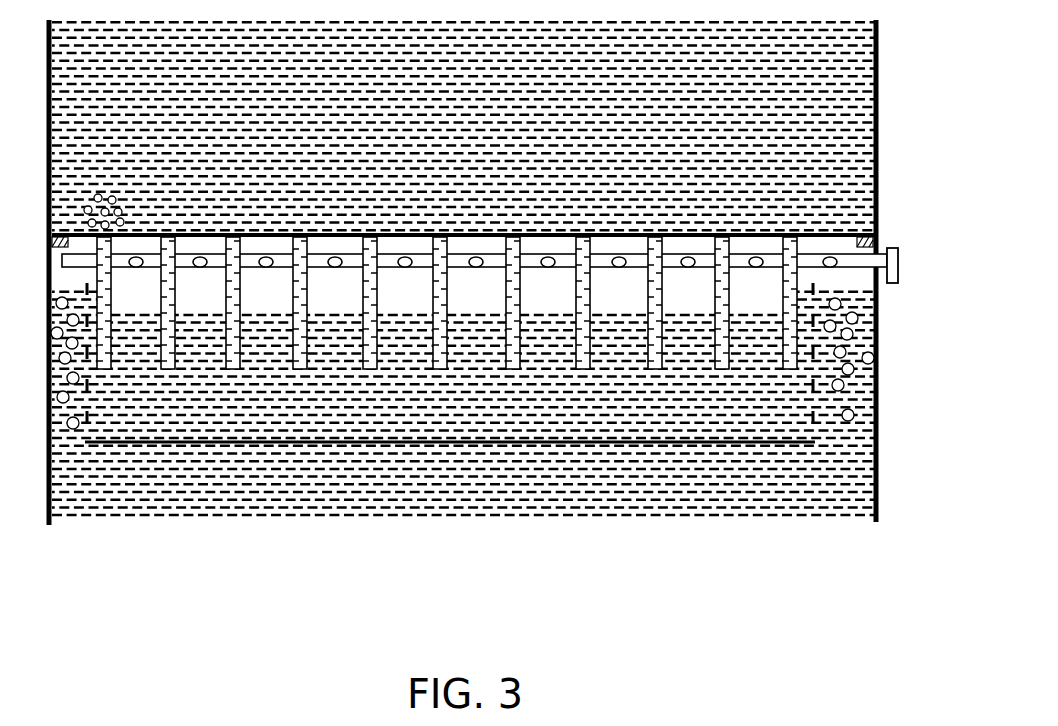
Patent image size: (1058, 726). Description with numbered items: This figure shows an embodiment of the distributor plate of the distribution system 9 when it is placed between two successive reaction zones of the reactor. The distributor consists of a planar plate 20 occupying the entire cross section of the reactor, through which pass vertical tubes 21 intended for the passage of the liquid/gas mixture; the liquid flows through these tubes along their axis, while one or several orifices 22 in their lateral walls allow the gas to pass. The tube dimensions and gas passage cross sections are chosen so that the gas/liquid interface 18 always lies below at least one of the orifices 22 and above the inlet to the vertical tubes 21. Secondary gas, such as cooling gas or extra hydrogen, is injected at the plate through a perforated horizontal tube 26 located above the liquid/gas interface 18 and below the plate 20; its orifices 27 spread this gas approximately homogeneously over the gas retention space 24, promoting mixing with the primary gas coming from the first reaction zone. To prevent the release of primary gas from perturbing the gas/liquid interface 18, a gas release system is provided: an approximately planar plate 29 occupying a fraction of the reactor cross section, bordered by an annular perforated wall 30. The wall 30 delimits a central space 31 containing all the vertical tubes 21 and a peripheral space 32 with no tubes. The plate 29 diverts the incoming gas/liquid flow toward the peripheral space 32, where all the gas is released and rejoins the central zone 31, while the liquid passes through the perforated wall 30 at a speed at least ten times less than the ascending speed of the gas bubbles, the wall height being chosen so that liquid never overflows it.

The distribution system 9 is at (800, 539).
The gas/liquid interface 18 is at (470, 316).
The planar plate 20 is at (336, 236).
The vertical tubes 21 is at (240, 350).
The orifices 22 is at (312, 366).
The gas retention space 24 is at (632, 288).
The perforated horizontal tube 26 is at (605, 254).
The orifices 27 is at (542, 256).
The planar plate 29 is at (480, 444).
The annular perforated wall 30 is at (815, 412).
The central space 31 is at (187, 407).
The peripheral space 32 is at (68, 392).